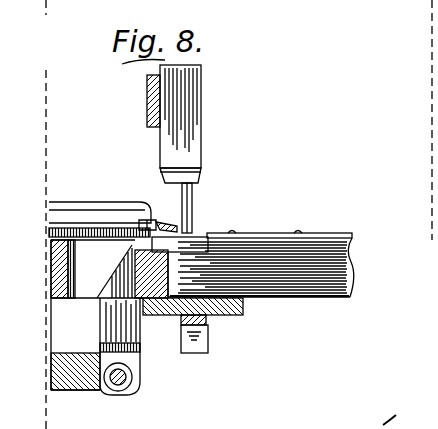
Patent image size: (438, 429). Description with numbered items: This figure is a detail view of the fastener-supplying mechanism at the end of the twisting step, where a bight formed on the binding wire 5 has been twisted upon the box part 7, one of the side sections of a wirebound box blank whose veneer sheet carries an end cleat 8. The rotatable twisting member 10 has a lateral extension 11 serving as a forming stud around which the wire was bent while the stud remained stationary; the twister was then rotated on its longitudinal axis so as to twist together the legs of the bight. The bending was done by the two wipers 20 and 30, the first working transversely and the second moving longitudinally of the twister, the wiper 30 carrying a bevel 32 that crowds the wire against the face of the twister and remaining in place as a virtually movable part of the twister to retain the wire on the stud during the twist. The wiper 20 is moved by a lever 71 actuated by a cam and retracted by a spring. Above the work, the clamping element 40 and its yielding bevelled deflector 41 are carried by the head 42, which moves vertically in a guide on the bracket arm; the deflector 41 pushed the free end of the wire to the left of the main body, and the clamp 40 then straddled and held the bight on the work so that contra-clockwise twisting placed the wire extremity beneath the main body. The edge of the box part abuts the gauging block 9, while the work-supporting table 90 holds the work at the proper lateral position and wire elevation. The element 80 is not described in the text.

The binding wire 5 is at (258, 232).
The box part 7 is at (312, 235).
The end cleat 8 is at (332, 278).
The block 9 is at (170, 268).
The twisting member 10 is at (62, 210).
The lateral extension (forming stud) 11 is at (113, 212).
The wiper 20 is at (112, 281).
The wiper 30 is at (73, 213).
The bevel 32 is at (160, 220).
The clamping element 40 is at (190, 200).
The yielding bevelled element (deflector) 41 is at (180, 232).
The head 42 is at (187, 96).
The lever 71 is at (74, 397).
The stop block 80 is at (147, 88).
The work-supporting table 90 is at (225, 318).